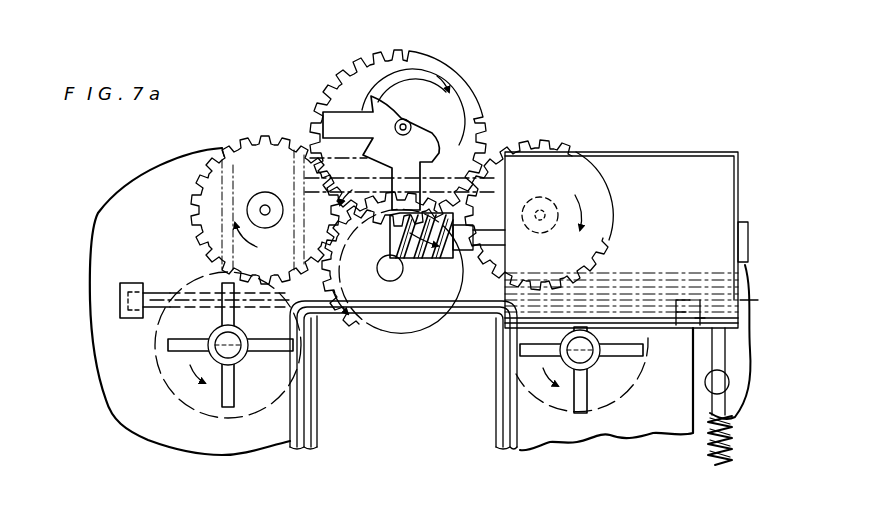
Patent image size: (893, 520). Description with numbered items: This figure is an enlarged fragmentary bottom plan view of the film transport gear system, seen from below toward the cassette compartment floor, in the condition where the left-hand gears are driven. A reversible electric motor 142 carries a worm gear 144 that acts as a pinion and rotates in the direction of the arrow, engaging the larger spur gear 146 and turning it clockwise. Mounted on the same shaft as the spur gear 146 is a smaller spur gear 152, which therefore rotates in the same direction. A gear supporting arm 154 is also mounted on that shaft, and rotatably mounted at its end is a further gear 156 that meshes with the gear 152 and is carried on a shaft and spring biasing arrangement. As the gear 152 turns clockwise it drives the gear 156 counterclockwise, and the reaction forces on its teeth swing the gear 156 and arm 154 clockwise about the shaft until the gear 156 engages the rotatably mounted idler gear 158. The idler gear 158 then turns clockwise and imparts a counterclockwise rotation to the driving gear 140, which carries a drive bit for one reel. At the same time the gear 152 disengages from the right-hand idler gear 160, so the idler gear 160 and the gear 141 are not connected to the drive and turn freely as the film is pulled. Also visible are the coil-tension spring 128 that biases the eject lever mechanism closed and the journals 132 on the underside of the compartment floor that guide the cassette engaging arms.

The coil-tension spring 128 is at (732, 438).
The journals 132 is at (132, 318).
The gear 140 is at (215, 407).
The gear 141 is at (601, 410).
The motor 142 is at (683, 245).
The worm gear 144 is at (462, 245).
The spur gear 146 is at (475, 150).
The spur gear 152 is at (462, 101).
The gear supporting arm 154 is at (343, 332).
The gear 156 is at (385, 333).
The idler gear 158 is at (270, 182).
The idler gear 160 is at (563, 188).